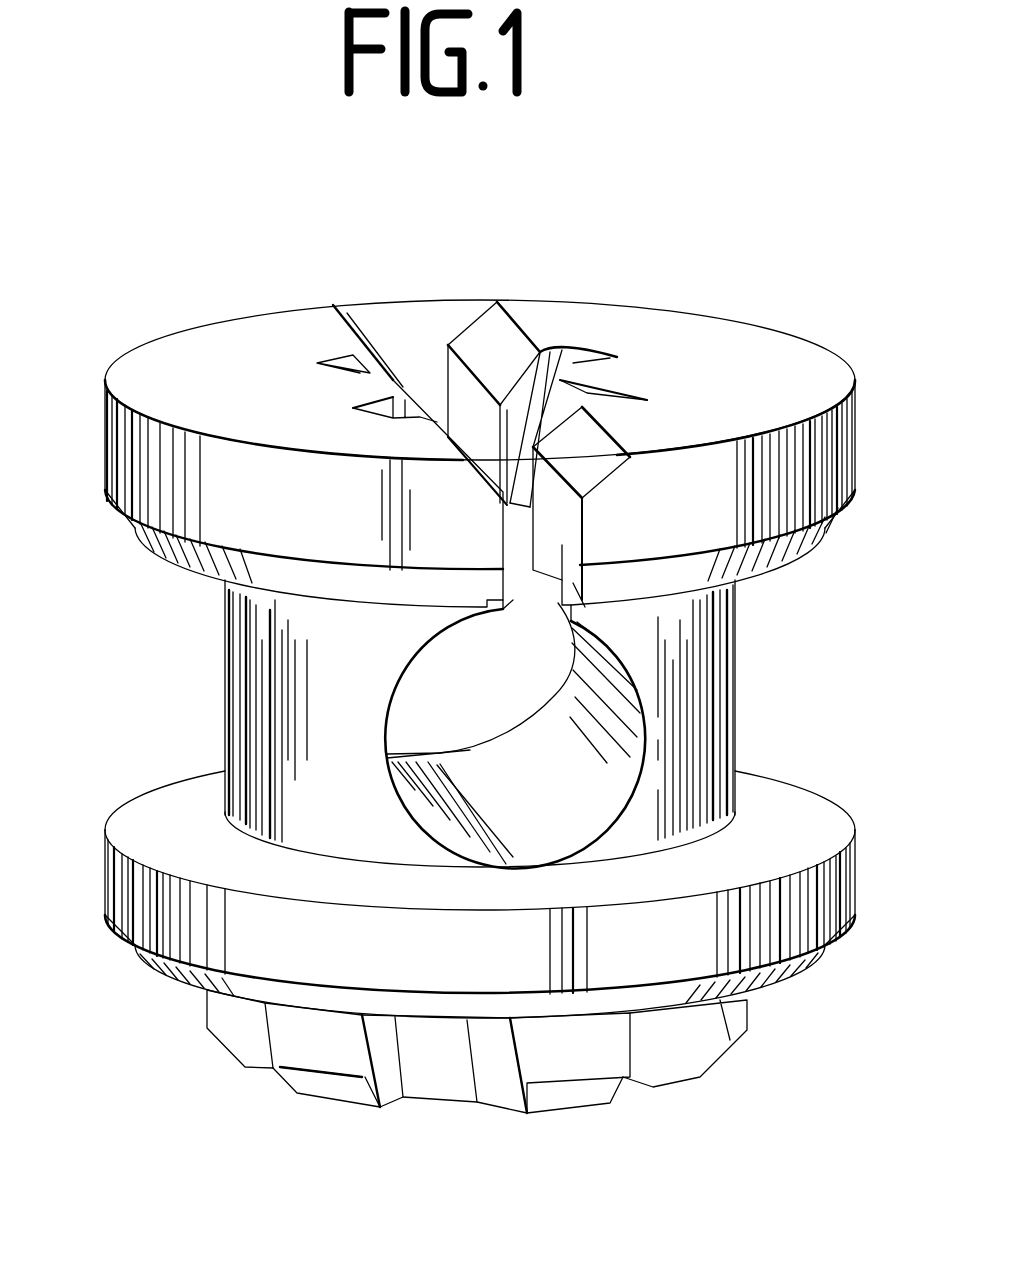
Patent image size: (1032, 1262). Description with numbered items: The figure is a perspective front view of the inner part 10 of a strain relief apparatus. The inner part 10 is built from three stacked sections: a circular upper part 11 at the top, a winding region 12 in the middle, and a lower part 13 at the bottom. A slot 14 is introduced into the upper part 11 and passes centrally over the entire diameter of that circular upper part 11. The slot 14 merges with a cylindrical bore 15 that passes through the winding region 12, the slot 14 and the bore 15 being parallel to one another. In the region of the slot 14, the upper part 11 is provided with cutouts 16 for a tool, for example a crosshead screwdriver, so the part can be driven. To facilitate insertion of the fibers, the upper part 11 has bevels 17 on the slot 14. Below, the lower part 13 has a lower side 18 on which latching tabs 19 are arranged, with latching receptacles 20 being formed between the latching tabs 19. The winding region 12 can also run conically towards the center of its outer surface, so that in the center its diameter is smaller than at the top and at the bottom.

The inner part 10 is at (860, 634).
The upper part 11 is at (133, 472).
The winding region 12 is at (248, 704).
The lower part 13 is at (127, 893).
The slot 14 is at (427, 374).
The cylindrical bore 15 is at (570, 743).
The cutouts 16 is at (370, 400).
The bevels 17 is at (382, 348).
The lower side 18 is at (810, 967).
The latching tabs 19 is at (317, 1043).
The latching receptacles 20 is at (430, 1070).